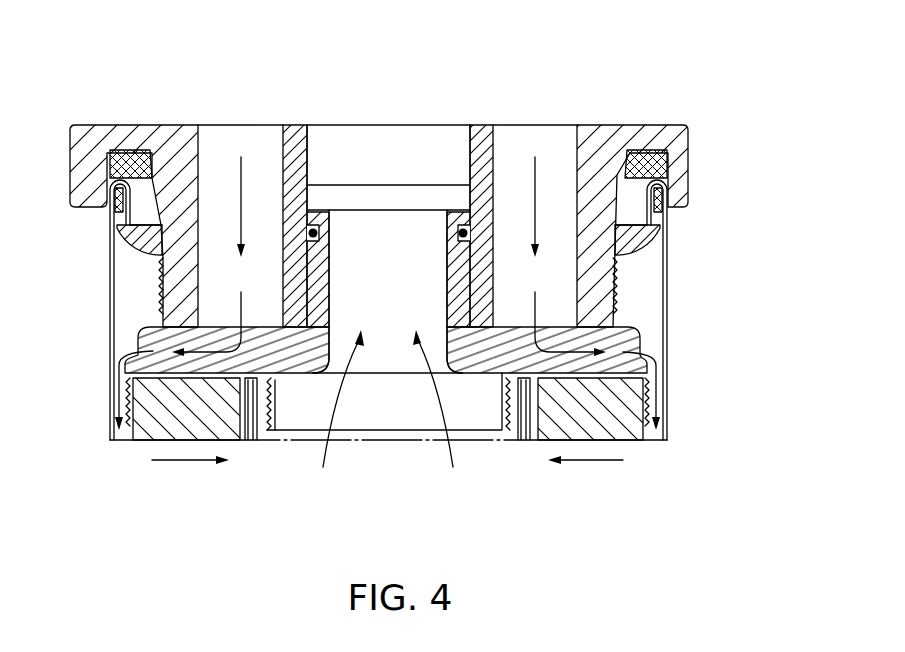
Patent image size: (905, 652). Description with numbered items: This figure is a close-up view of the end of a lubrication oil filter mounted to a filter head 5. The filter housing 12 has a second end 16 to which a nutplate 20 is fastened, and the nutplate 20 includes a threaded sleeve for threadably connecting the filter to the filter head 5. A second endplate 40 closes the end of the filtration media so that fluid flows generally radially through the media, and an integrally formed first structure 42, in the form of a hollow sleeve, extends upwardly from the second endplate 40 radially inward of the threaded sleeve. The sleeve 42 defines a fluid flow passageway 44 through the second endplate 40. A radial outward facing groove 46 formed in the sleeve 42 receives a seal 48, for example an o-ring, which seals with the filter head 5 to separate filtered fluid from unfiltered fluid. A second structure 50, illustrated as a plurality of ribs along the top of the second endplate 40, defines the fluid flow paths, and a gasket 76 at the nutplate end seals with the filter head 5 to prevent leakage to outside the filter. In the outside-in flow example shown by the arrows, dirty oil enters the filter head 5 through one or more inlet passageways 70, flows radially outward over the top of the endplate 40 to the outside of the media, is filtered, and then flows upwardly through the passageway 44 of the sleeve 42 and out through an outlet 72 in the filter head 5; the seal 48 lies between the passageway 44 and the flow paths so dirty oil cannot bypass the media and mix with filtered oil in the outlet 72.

The filter head 5 is at (105, 108).
The housing 12 is at (667, 422).
The second end 16 is at (668, 222).
The nutplate 20 is at (643, 240).
The second endplate 40 is at (164, 379).
The first structure (sleeve) 42 is at (428, 255).
The fluid flow passageway 44 is at (358, 253).
The radial outward facing groove 46 is at (312, 195).
The seal 48 is at (480, 245).
The second structure 50 is at (215, 338).
The inlet passageway 70 is at (229, 127).
The outlet 72 is at (385, 147).
The gasket 76 is at (660, 160).